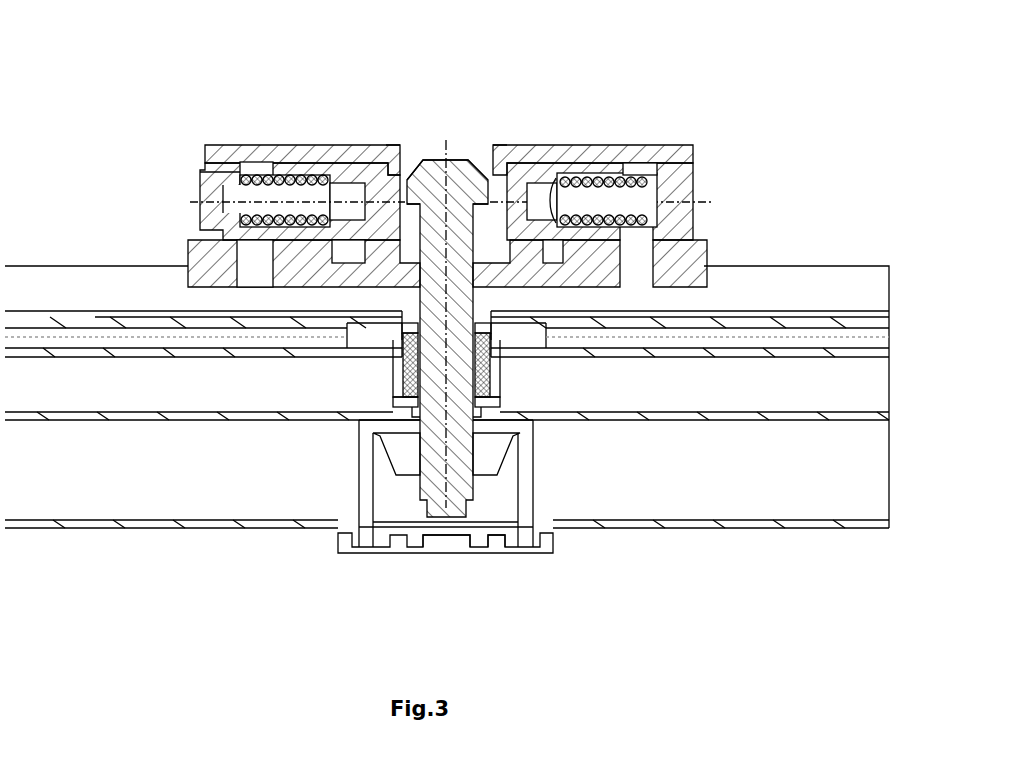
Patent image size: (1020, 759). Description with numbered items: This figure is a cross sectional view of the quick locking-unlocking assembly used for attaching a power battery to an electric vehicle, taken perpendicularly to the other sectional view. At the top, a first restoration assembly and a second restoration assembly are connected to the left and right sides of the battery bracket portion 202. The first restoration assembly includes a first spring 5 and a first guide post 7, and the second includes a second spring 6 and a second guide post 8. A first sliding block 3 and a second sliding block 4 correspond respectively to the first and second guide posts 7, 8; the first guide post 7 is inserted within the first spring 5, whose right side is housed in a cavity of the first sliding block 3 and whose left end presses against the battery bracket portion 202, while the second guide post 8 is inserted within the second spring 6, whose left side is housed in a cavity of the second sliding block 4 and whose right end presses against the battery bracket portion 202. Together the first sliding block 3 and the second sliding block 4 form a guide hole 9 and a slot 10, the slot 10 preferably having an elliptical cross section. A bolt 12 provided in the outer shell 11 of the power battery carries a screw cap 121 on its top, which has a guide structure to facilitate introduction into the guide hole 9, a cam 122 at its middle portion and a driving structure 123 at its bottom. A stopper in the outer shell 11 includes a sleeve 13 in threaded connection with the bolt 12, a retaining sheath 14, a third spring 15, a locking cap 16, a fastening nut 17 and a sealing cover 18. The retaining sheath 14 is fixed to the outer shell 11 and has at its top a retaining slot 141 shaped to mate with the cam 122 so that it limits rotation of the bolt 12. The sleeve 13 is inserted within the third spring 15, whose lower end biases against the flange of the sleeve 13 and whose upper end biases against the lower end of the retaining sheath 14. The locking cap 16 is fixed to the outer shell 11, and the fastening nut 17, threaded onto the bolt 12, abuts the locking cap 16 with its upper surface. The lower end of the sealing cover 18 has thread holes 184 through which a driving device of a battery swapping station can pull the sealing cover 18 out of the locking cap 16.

The first sliding block 3 is at (357, 173).
The second sliding block 4 is at (508, 192).
The first spring 5 is at (308, 183).
The second spring 6 is at (598, 180).
The first guide post 7 is at (255, 193).
The second guide post 8 is at (677, 188).
The guide hole 9 is at (482, 214).
The slot 10 is at (487, 277).
The outer shell 11 is at (442, 445).
The bolt 12 is at (573, 378).
The sleeve 13 is at (397, 407).
The retaining sheath 14 is at (393, 343).
The third spring 15 is at (407, 370).
The locking cap 16 is at (525, 492).
The fastening nut 17 is at (480, 463).
The sealing cover 18 is at (481, 544).
The screw cap 121 is at (455, 177).
The cam 122 is at (398, 303).
The driving structure 123 is at (420, 550).
The retaining slot 141 is at (398, 323).
The thread holes 184 is at (438, 543).
The battery bracket portion 202 is at (386, 146).